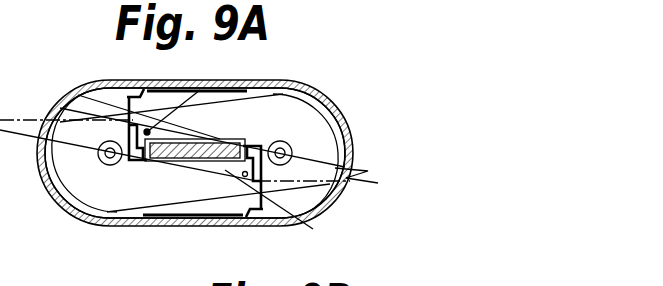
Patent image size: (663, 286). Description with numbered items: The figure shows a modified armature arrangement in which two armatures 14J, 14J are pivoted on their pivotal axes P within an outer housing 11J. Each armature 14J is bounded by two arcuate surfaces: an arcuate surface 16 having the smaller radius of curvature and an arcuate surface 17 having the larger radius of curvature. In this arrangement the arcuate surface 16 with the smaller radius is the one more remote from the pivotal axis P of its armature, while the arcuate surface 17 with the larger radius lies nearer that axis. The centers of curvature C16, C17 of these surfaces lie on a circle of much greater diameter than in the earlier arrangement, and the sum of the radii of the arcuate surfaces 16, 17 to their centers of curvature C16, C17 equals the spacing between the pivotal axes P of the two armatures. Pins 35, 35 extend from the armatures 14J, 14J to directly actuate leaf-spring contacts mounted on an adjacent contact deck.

The roller shell 11J is at (315, 100).
The armature 14J is at (253, 110).
The arcuate surface 16 is at (83, 97).
The arcuate surface 17 is at (132, 91).
The pin 35 is at (212, 78).
The pivotal axis P is at (290, 147).
The center of curvature C16 is at (148, 130).
The center of curvature C17 is at (378, 183).